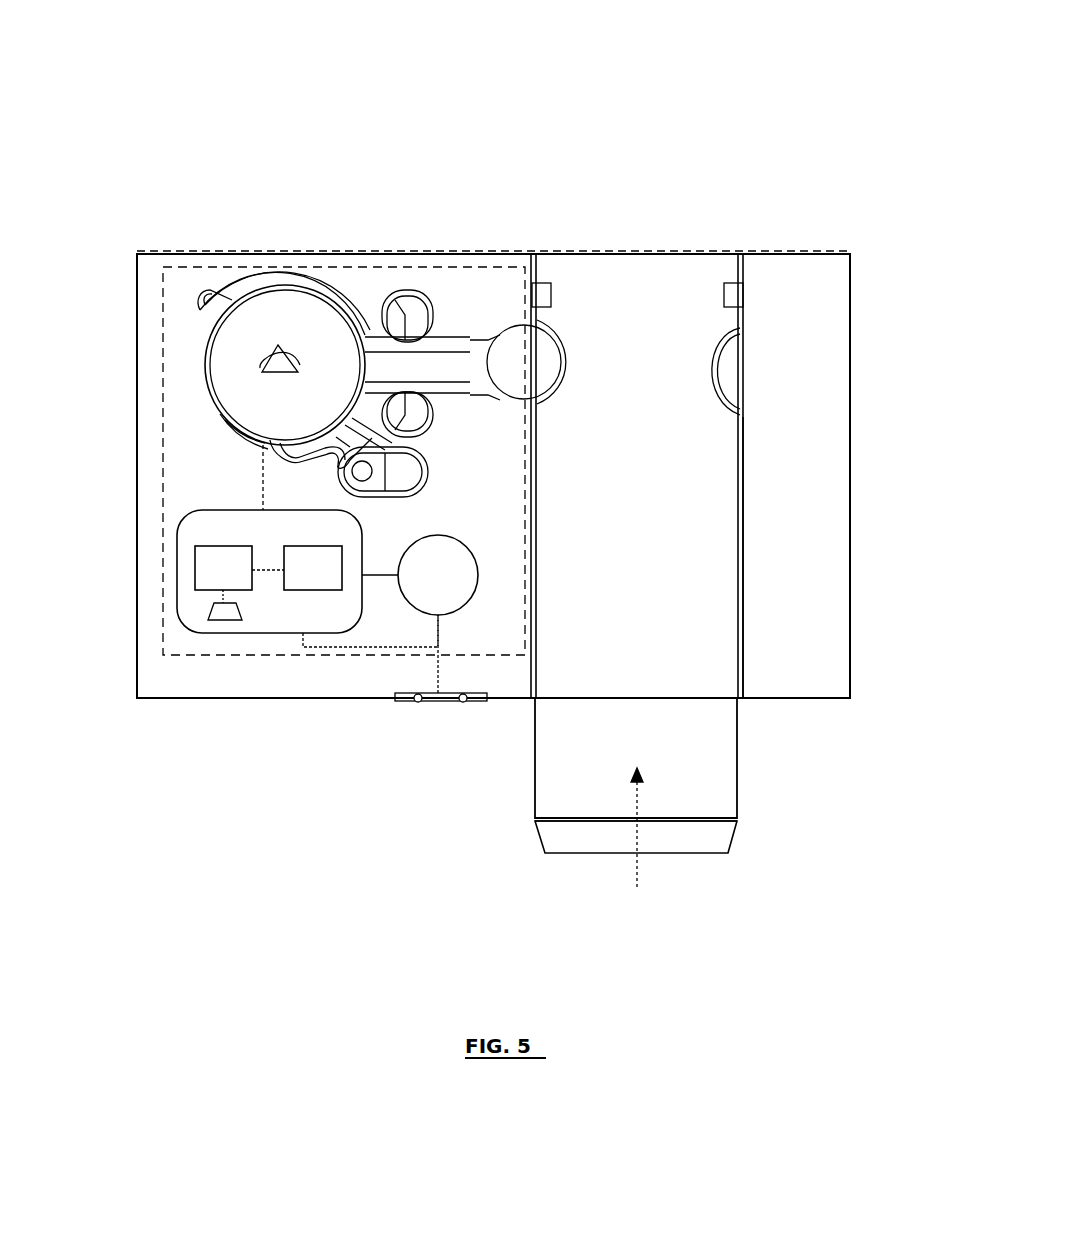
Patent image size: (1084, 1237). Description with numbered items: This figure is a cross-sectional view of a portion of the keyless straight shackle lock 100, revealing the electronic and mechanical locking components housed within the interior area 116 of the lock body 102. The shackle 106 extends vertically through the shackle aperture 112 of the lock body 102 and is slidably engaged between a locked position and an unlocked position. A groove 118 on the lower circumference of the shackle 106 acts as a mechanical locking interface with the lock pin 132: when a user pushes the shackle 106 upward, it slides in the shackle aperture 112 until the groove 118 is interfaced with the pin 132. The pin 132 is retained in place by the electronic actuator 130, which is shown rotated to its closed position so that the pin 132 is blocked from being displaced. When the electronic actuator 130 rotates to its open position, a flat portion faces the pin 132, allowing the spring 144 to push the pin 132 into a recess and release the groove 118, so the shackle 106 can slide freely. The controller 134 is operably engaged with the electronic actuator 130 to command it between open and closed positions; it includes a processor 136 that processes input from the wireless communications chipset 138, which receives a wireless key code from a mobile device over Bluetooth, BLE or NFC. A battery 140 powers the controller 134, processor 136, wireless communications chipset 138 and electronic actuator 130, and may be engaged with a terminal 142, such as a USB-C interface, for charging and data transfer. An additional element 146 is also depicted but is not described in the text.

The keyless straight shackle lock 100 is at (168, 74).
The lock body 102 is at (851, 380).
The shackle 106 is at (545, 770).
The shackle aperture 112 is at (743, 643).
The interior area 116 is at (150, 268).
The groove 118 is at (722, 363).
The electronic actuator 130 is at (315, 318).
The lock pin 132 is at (472, 350).
The controller 134 is at (200, 525).
The processor 136 is at (200, 577).
The wireless communications chipset 138 is at (300, 595).
The battery 140 is at (425, 595).
The terminal 142 is at (433, 702).
The spring 144 is at (413, 337).
The indicator 146 is at (221, 625).